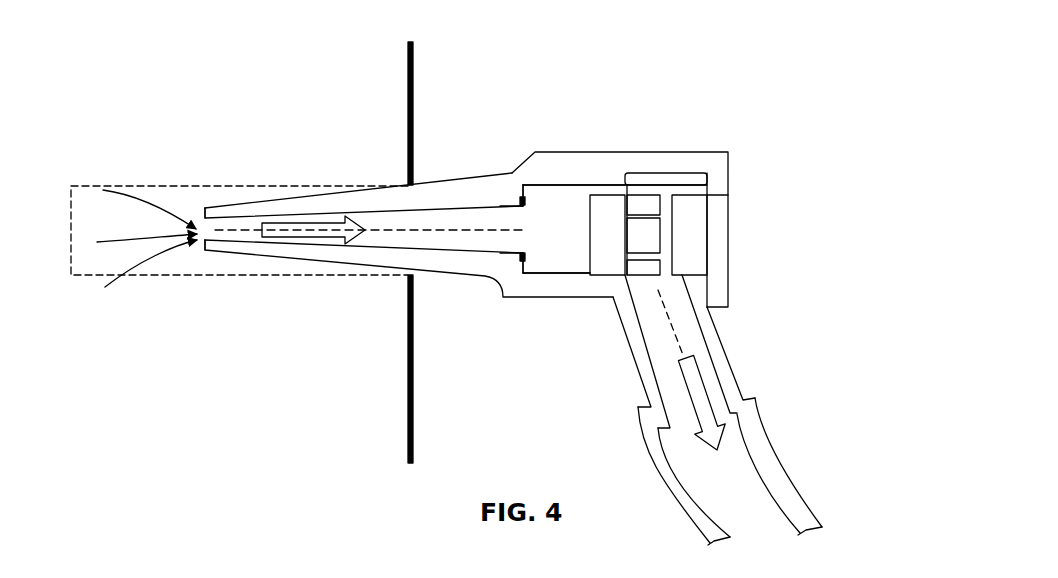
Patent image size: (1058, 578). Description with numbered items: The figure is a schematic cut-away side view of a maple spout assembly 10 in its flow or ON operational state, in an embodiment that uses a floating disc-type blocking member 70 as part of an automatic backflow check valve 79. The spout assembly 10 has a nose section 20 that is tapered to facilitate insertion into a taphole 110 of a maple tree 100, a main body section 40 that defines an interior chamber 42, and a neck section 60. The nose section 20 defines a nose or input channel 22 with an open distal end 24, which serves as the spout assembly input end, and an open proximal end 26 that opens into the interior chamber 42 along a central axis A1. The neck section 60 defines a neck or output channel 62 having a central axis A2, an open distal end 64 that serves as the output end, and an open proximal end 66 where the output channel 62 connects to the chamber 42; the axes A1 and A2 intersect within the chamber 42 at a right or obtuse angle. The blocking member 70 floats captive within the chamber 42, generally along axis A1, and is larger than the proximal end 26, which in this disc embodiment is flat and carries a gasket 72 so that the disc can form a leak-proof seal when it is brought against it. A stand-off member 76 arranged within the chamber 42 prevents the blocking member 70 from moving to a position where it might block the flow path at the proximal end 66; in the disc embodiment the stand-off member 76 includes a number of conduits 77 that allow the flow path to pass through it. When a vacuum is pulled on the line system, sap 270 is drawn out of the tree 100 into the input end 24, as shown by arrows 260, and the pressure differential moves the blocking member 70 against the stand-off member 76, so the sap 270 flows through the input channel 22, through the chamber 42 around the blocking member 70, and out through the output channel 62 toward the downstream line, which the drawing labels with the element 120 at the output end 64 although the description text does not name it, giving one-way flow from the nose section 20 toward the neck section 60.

The maple spout assembly 10 is at (532, 273).
The nose section 20 is at (403, 196).
The nose channel 22 is at (380, 220).
The open distal end 24 is at (205, 207).
The open proximal end 26 is at (532, 218).
The main body section 40 is at (656, 199).
The interior chamber 42 is at (563, 192).
The neck section 60 is at (632, 377).
The neck channel 62 is at (685, 333).
The open distal end 64 is at (660, 430).
The open proximal end 66 is at (668, 280).
The blocking member 70 is at (592, 237).
The gasket 72 is at (523, 206).
The stand-off member 76 is at (667, 173).
The conduits 77 is at (655, 212).
The automatic backflow check valve 79 is at (617, 172).
The maple tree 100 is at (413, 76).
The taphole 110 is at (287, 276).
The second outlet tube 120 is at (770, 432).
The arrows 260 is at (308, 225).
The sap 270 is at (148, 203).
The central axis A1 is at (437, 230).
The central axis A2 is at (662, 316).